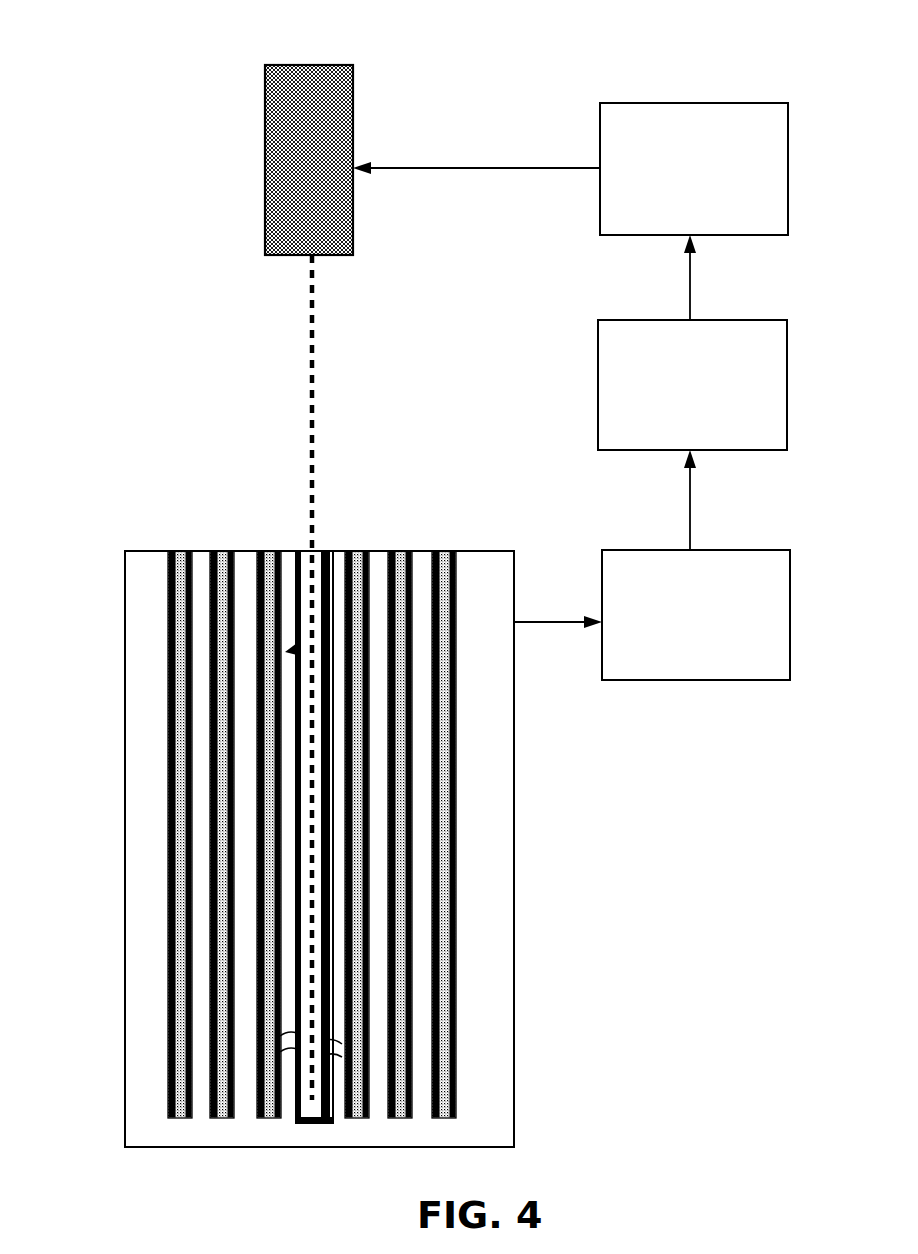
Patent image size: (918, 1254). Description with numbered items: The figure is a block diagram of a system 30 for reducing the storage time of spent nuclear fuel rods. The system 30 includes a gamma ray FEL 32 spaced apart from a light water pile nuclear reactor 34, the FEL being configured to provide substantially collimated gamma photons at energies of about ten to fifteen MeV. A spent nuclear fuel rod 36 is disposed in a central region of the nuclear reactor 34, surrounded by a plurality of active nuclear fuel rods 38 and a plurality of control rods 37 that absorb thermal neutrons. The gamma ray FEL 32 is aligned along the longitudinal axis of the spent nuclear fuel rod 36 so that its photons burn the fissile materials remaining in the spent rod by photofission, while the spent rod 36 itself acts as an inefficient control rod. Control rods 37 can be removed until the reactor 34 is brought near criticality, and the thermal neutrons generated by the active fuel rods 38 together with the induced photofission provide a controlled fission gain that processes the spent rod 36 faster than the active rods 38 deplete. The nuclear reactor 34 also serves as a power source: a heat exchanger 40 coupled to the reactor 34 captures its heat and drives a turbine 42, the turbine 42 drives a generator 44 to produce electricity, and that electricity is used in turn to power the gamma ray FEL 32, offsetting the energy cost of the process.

The system 30 is at (150, 138).
The gamma ray FEL 32 is at (322, 65).
The light water pile nuclear reactor 34 is at (157, 468).
The spent nuclear fuel rod 36 is at (320, 551).
The control rod 37 is at (222, 551).
The active nuclear fuel rod 38 is at (180, 551).
The heat exchanger 40 is at (748, 550).
The turbine 42 is at (748, 320).
The generator 44 is at (740, 103).